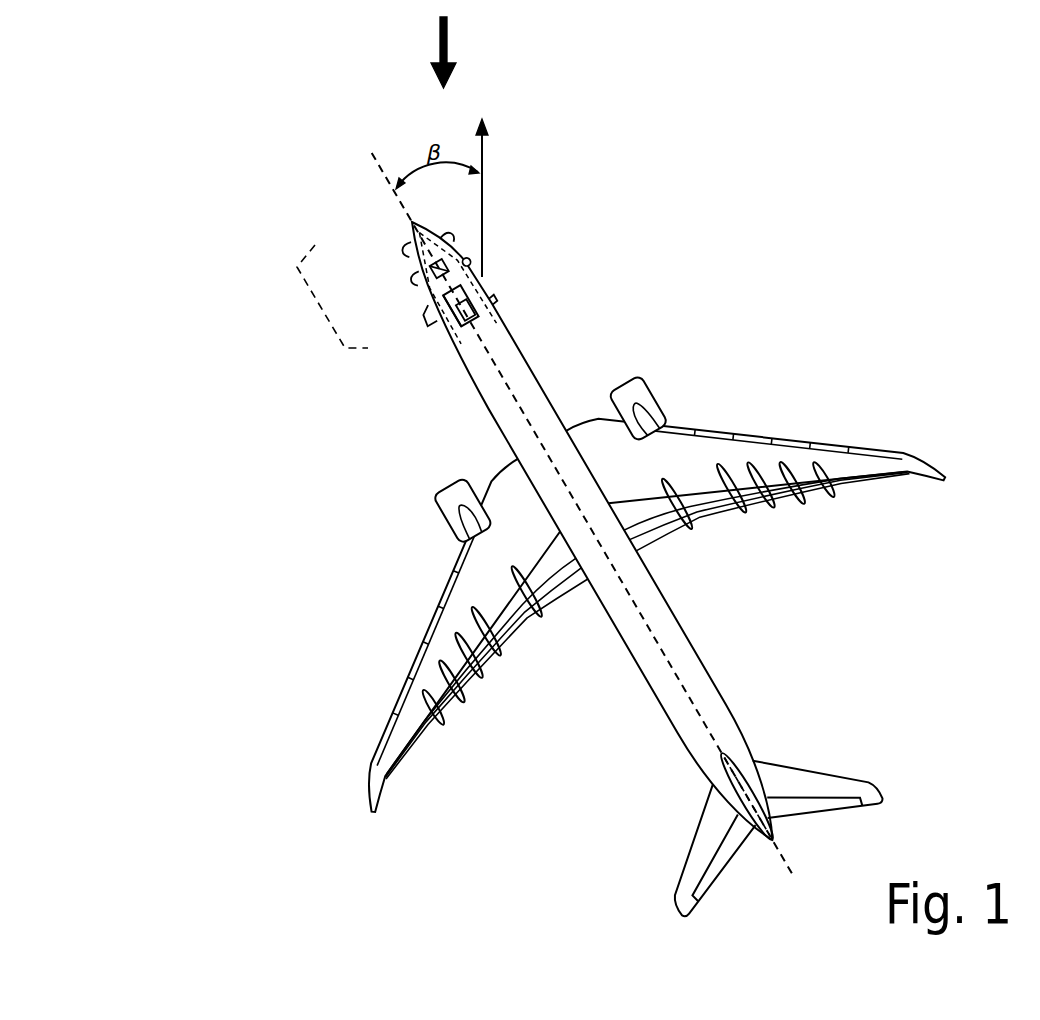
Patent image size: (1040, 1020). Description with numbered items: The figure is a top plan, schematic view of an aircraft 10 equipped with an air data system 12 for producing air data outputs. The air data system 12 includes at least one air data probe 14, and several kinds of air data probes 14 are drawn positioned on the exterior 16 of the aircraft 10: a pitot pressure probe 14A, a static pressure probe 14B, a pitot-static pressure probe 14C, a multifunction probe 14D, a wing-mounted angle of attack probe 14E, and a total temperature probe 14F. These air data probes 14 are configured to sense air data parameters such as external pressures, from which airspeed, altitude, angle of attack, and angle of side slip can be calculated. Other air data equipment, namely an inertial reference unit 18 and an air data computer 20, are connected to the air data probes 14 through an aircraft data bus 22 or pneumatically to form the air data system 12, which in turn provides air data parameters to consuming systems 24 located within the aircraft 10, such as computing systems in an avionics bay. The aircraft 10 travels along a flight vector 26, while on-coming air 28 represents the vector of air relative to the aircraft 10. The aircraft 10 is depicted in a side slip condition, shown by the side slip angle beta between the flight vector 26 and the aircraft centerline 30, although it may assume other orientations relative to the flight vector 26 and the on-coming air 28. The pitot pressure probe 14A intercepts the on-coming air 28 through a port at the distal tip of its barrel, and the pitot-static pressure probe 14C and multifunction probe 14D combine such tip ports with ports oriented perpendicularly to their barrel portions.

The aircraft 10 is at (244, 178).
The air data system 12 is at (396, 210).
The air data probe 14 is at (317, 303).
The pitot pressure probe 14A is at (398, 252).
The static pressure probe 14B is at (470, 262).
The pitot-static pressure probe 14C is at (403, 287).
The multifunction probe 14D is at (453, 230).
The wing-mounted angle of attack probe 14E is at (427, 330).
The total temperature probe 14F is at (500, 300).
The exterior 16 is at (563, 392).
The inertial reference unit 18 is at (480, 297).
The air data computer 20 is at (482, 278).
The aircraft data bus 22 is at (455, 330).
The consuming systems 24 is at (447, 257).
The flight vector 26 is at (484, 143).
The on-coming air 28 is at (457, 52).
The aircraft centerline 30 is at (507, 390).